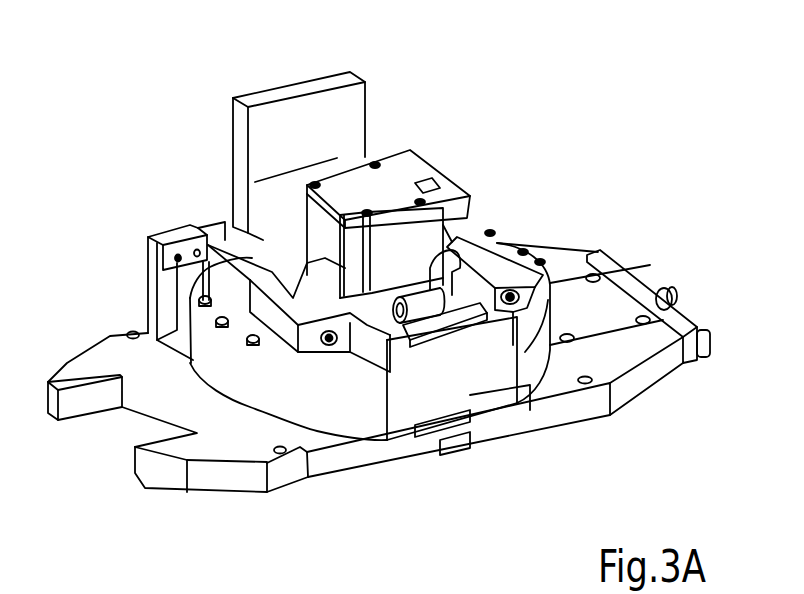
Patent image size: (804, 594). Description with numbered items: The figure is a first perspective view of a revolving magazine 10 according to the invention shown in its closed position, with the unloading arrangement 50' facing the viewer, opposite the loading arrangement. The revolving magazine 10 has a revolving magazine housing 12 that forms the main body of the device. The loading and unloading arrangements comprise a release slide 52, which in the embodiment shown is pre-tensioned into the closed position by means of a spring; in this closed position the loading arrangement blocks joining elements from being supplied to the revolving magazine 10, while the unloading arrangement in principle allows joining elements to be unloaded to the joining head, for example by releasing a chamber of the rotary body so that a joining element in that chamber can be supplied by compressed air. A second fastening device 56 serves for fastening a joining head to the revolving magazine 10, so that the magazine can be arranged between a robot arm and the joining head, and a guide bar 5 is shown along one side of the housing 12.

The revolving magazine 10 is at (533, 172).
The revolving magazine housing 12 is at (358, 403).
The guide bar 5 is at (635, 347).
The rotary clamp unit 50' is at (448, 367).
The release slide 52 is at (353, 118).
The second fastening device 56 is at (422, 167).